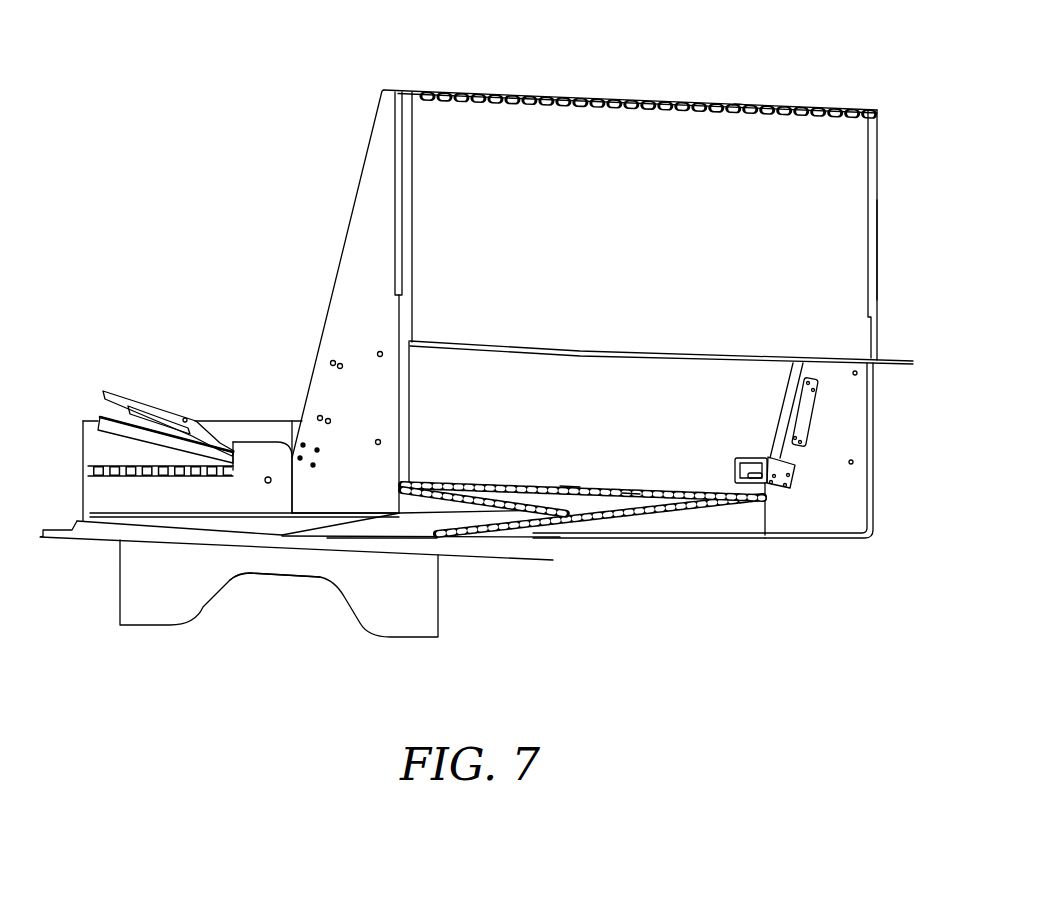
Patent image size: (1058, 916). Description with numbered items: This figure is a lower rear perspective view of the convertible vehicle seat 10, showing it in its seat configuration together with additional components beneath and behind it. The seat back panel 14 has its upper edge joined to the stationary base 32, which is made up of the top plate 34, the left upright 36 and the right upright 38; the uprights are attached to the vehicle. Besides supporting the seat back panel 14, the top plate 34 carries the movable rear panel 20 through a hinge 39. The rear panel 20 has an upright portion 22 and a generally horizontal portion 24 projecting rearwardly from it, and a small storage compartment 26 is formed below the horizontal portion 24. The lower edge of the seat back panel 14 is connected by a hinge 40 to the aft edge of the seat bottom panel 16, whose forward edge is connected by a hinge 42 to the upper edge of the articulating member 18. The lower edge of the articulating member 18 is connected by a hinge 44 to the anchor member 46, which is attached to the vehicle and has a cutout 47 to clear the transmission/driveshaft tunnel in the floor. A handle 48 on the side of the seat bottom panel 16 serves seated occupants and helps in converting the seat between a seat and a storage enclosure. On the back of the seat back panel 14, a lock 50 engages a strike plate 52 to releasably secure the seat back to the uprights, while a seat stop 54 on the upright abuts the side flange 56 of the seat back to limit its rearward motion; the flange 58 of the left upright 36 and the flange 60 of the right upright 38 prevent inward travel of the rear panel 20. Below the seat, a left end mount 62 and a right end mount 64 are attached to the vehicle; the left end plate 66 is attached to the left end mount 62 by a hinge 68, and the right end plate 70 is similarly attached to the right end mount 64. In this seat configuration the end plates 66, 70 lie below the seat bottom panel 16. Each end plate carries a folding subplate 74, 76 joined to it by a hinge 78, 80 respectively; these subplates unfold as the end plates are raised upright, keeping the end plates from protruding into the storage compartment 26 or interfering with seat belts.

The seat 10 is at (168, 153).
The seat back panel 14 is at (535, 408).
The seat bottom panel 16 is at (262, 432).
The articulating member 18 is at (83, 438).
The rear panel 20 is at (633, 247).
The upright portion 22 is at (858, 187).
The horizontal portion 24 is at (898, 365).
The small storage compartment 26 is at (845, 566).
The stationary base 32 is at (328, 59).
The top plate 34 is at (586, 92).
The left upright 36 is at (343, 407).
The right upright 38 is at (830, 452).
The hinge 39 is at (737, 113).
The hinge 40 is at (568, 487).
The hinge 42 is at (222, 418).
The hinge 44 is at (55, 530).
The anchor member 46 is at (148, 602).
The cutout 47 is at (262, 625).
The handle 48 is at (121, 397).
The lock 50 is at (753, 458).
The strike plate 52 is at (793, 477).
The seat stop 54 is at (808, 398).
The side flange 56 is at (790, 380).
The flange 58 is at (412, 188).
The flange 60 is at (878, 248).
The left end mount 62 is at (228, 508).
The right end mount 64 is at (698, 520).
The left end plate 66 is at (147, 470).
The hinge 68 is at (147, 477).
The right end plate 70 is at (448, 523).
The subplate 74 is at (437, 503).
The subplate 76 is at (383, 541).
The hinge 78 is at (492, 498).
The hinge 80 is at (630, 492).